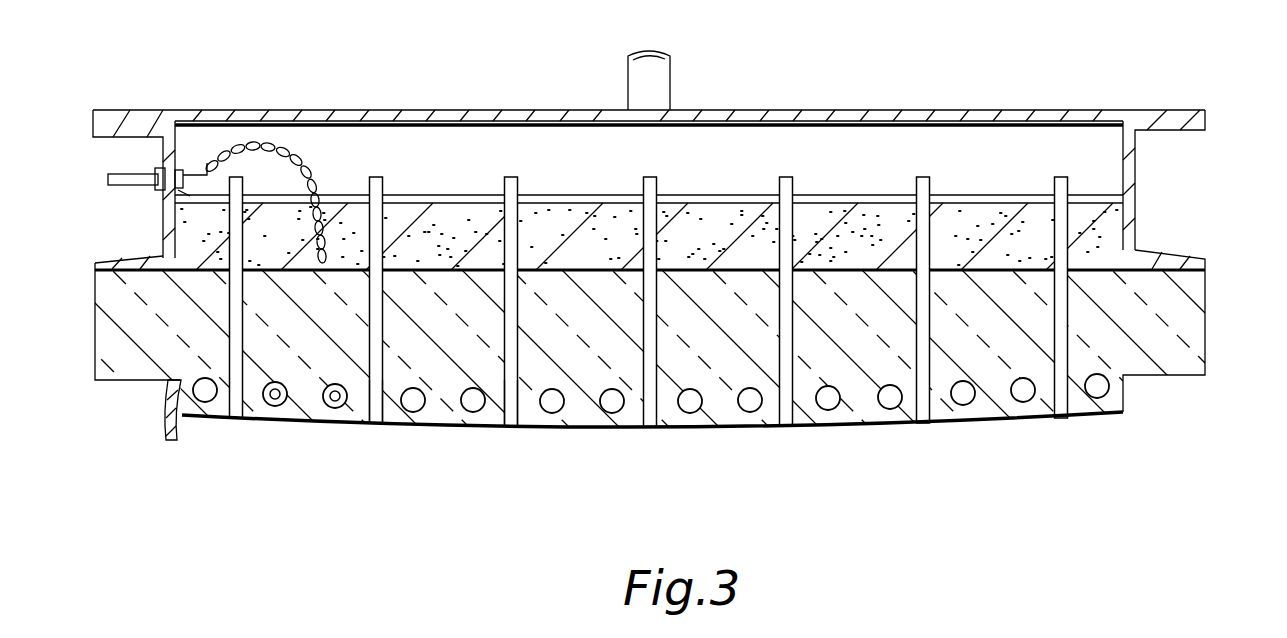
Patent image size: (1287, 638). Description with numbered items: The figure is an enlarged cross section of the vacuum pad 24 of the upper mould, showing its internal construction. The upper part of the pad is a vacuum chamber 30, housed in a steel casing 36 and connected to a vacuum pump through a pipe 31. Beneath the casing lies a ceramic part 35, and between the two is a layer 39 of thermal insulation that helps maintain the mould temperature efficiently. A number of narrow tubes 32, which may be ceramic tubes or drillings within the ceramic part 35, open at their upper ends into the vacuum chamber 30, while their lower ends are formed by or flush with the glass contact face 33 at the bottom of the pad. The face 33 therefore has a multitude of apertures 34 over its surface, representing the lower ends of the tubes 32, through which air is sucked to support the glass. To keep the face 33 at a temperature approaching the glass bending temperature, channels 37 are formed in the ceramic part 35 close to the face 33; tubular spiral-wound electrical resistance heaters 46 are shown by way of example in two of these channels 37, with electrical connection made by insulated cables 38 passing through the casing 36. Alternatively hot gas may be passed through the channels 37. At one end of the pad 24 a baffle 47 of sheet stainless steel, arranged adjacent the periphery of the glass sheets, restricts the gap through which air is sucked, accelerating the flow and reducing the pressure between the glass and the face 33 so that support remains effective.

The vacuum pad 24 is at (645, 455).
The vacuum chamber 30 is at (745, 153).
The pipe 31 is at (663, 64).
The narrow tubes 32 is at (510, 177).
The glass contact face 33 is at (712, 433).
The apertures 34 is at (378, 436).
The ceramic part 35 is at (1192, 315).
The steel casing 36 is at (1178, 118).
The channels 37 is at (833, 428).
The insulated cables 38 is at (302, 166).
The layer of thermal insulation 39 is at (1113, 228).
The electrical resistance heaters 46 is at (274, 407).
The baffle 47 is at (165, 422).